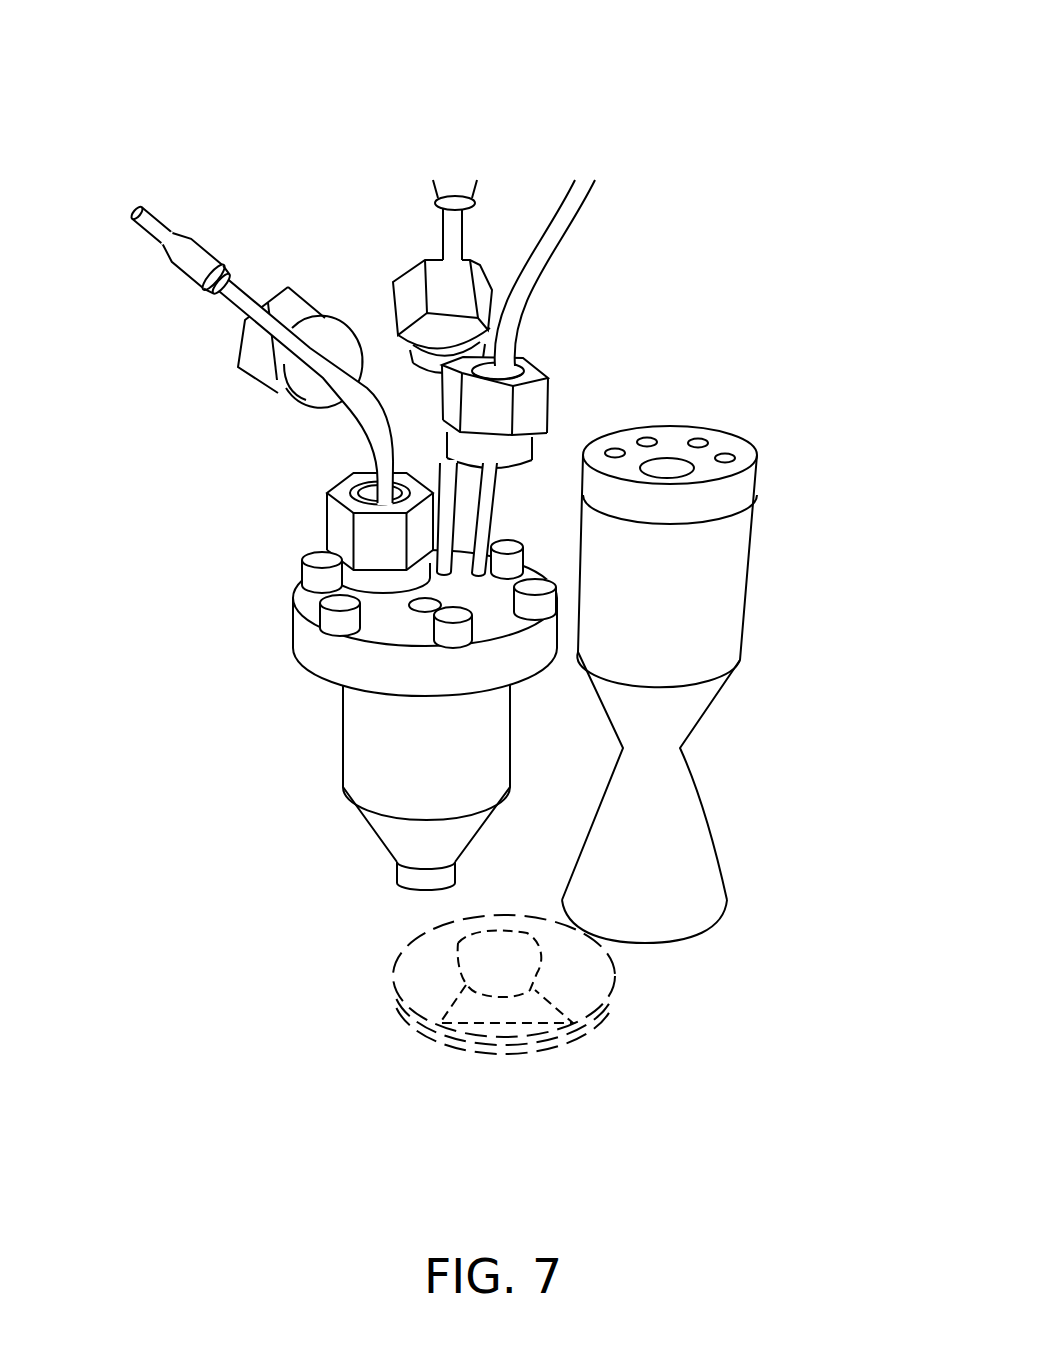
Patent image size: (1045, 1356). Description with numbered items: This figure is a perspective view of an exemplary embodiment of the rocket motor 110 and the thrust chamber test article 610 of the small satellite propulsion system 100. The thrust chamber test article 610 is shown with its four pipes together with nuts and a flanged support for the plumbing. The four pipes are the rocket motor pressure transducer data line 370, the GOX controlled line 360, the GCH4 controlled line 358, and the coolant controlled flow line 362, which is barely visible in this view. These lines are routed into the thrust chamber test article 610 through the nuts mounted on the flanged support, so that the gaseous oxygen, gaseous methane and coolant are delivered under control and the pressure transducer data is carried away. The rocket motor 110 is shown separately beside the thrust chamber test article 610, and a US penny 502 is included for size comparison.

The thruster assembly 100 is at (110, 32).
The rocket motor 110 is at (713, 593).
The GCH4 controlled line 358 is at (585, 181).
The GOX controlled line 360 is at (296, 337).
The coolant controlled flow line 362 is at (357, 443).
The rocket motor pressure transducer data line 370 is at (448, 238).
The US penny 502 is at (497, 1033).
The thrust chamber test article 610 is at (368, 733).